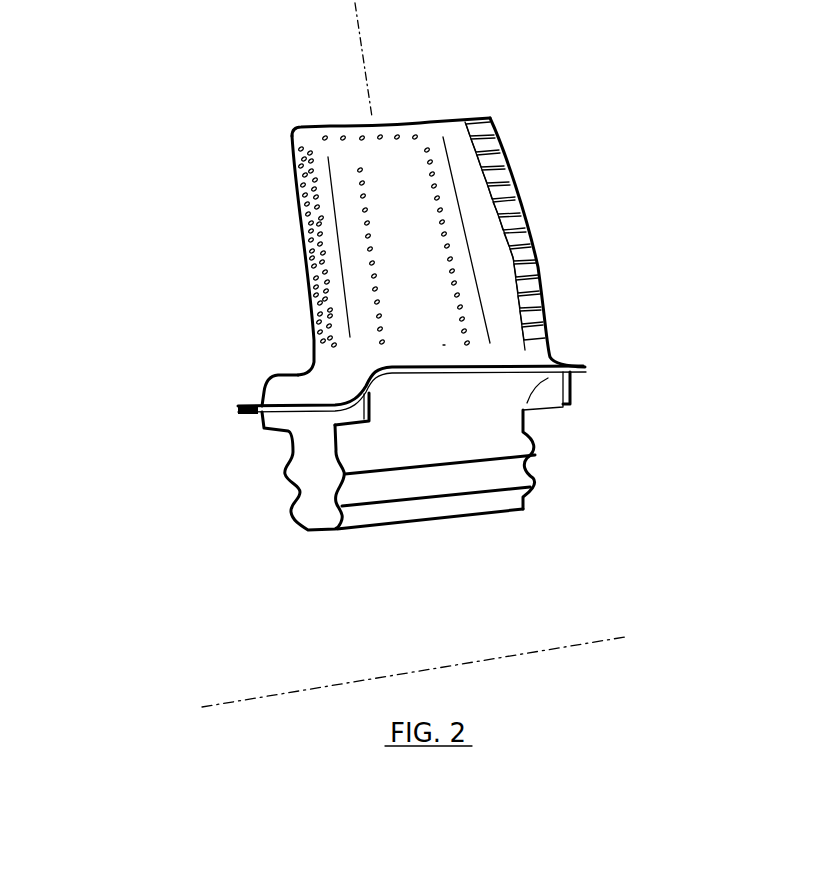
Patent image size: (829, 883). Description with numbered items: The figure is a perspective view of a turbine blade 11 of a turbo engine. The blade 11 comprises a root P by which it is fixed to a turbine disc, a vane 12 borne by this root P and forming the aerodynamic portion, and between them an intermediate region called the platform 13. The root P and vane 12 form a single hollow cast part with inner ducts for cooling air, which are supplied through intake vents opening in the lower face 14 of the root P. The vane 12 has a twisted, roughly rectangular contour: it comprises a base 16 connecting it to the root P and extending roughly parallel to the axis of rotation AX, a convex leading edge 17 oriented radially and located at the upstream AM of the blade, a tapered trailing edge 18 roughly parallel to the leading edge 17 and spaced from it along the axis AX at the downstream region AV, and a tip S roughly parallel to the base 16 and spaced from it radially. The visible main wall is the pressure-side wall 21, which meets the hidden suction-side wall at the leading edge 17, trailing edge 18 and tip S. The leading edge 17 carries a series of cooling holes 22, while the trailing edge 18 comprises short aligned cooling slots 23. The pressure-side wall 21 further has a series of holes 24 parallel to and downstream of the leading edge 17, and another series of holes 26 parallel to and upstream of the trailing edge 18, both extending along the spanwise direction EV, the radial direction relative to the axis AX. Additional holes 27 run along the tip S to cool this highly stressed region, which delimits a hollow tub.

The blade 11 is at (138, 303).
The vane 12 is at (549, 112).
The platform 13 is at (588, 372).
The lower face of the root 14 is at (421, 534).
The base 16 is at (443, 345).
The leading edge 17 is at (298, 183).
The trailing edge 18 is at (510, 163).
The pressure-side wall 21 is at (392, 245).
The cooling holes 22 is at (330, 320).
The cooling slots 23 is at (545, 312).
The series of holes 24 is at (364, 191).
The series of holes 26 is at (468, 333).
The additional holes 27 is at (415, 137).
The tip S is at (362, 128).
The spanwise direction EV is at (358, 22).
The upstream AM is at (320, 237).
The downstream region AV is at (523, 215).
The axis of rotation AX is at (233, 702).
The root P is at (449, 439).